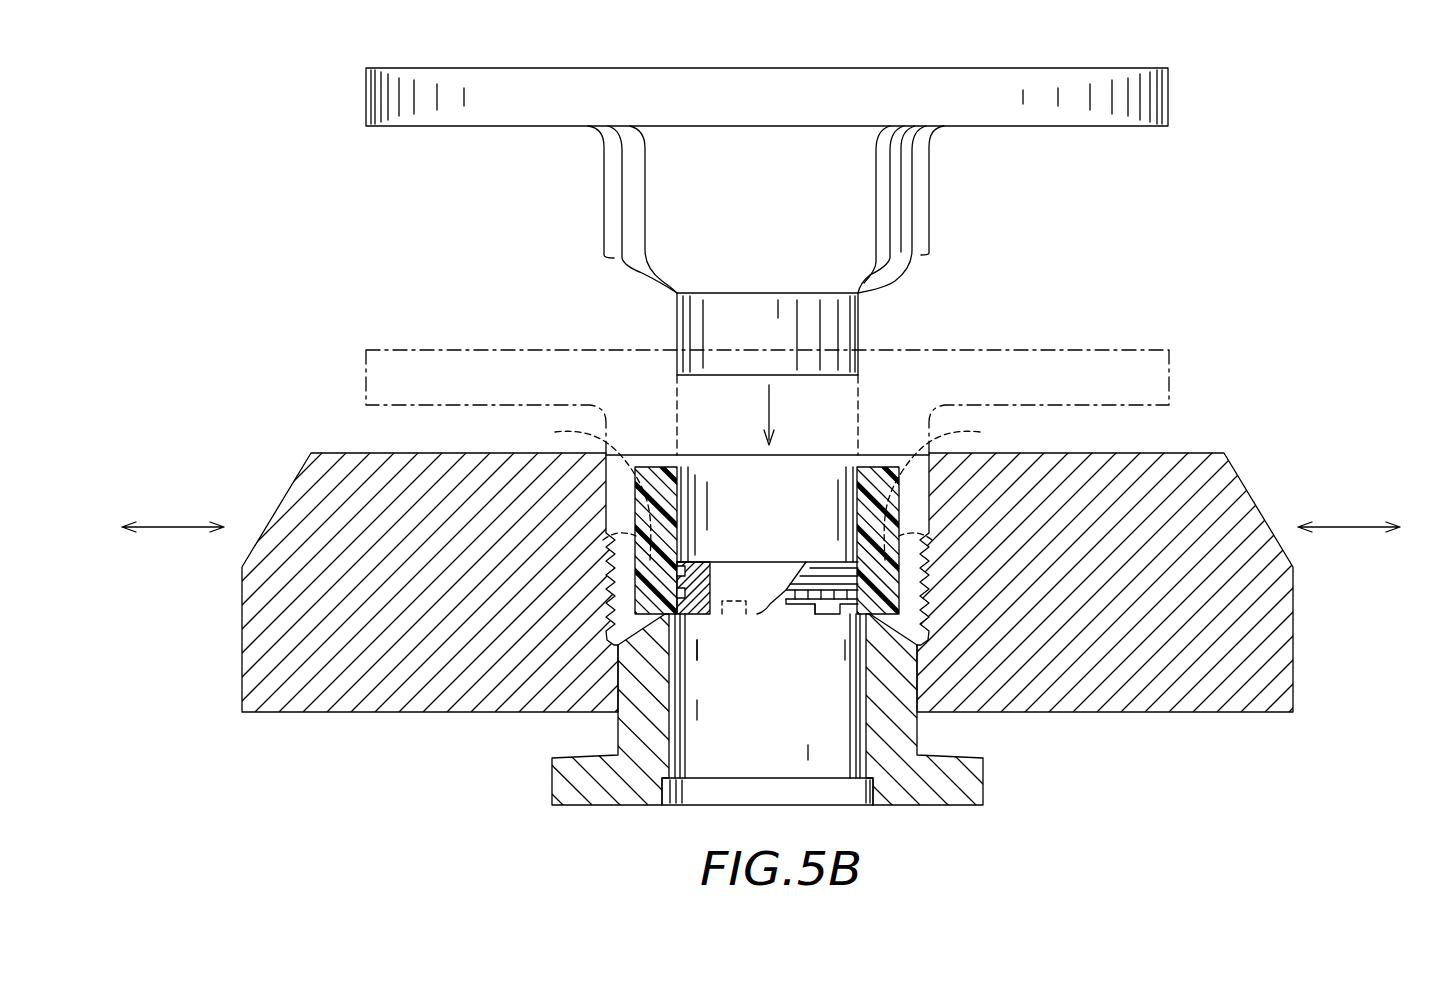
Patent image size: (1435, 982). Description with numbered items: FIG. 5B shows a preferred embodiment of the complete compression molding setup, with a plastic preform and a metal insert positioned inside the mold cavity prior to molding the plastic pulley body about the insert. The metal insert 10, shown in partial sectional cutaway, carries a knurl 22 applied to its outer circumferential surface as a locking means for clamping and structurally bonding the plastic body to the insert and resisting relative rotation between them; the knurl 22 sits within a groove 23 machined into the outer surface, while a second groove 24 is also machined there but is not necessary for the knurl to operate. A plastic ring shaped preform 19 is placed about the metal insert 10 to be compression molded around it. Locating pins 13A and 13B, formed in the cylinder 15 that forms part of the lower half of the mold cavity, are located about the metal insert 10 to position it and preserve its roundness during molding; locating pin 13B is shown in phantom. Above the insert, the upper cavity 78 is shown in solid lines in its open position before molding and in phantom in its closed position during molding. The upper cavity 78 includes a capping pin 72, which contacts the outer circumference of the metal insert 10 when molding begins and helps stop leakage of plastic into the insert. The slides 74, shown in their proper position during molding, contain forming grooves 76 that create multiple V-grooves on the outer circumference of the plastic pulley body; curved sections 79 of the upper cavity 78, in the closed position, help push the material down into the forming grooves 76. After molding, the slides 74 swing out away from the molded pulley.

The metal insert 10 is at (700, 562).
The locating pin 13A is at (817, 620).
The locating pin 13B is at (740, 607).
The cylinder 15 is at (733, 743).
The plastic ring shaped preform 19 is at (650, 472).
The knurl 22 is at (807, 607).
The groove 23 is at (840, 610).
The groove 24 is at (820, 574).
The capping pin 72 is at (830, 327).
The slides 74 is at (303, 486).
The forming grooves 76 is at (612, 644).
The upper cavity 78 is at (622, 143).
The curved sections 79 is at (637, 272).